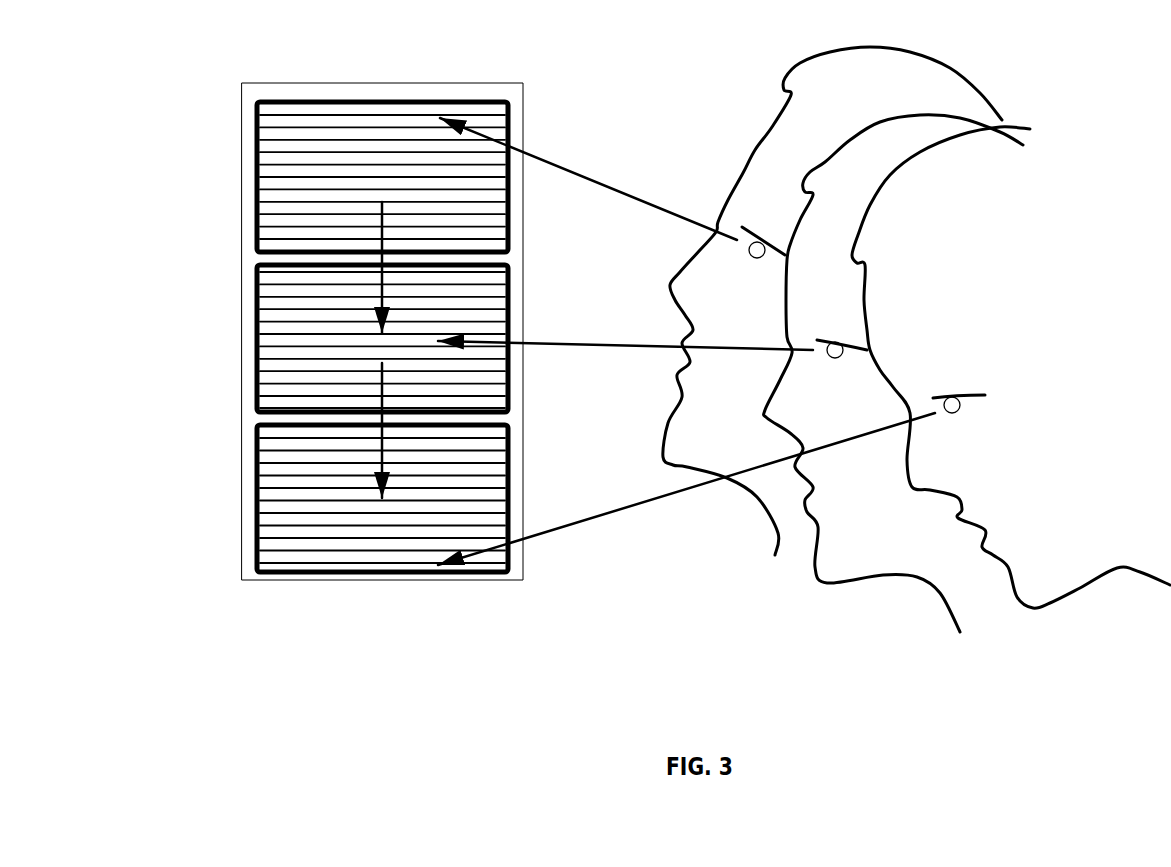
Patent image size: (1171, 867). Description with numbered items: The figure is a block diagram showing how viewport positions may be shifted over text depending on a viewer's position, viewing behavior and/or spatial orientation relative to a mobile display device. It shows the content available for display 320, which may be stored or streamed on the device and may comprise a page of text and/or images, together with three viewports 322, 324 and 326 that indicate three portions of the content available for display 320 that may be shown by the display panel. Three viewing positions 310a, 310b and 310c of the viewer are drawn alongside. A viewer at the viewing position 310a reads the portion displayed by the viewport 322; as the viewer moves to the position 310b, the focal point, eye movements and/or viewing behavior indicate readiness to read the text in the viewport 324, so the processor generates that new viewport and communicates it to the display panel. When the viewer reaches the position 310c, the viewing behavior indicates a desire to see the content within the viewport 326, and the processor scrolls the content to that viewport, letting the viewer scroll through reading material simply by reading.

The content available for display 320 is at (275, 83).
The viewport 322 is at (257, 176).
The viewport 324 is at (257, 317).
The viewport 326 is at (257, 477).
The viewing position 310a is at (967, 104).
The viewing position 310b is at (920, 146).
The viewing position 310c is at (1023, 180).